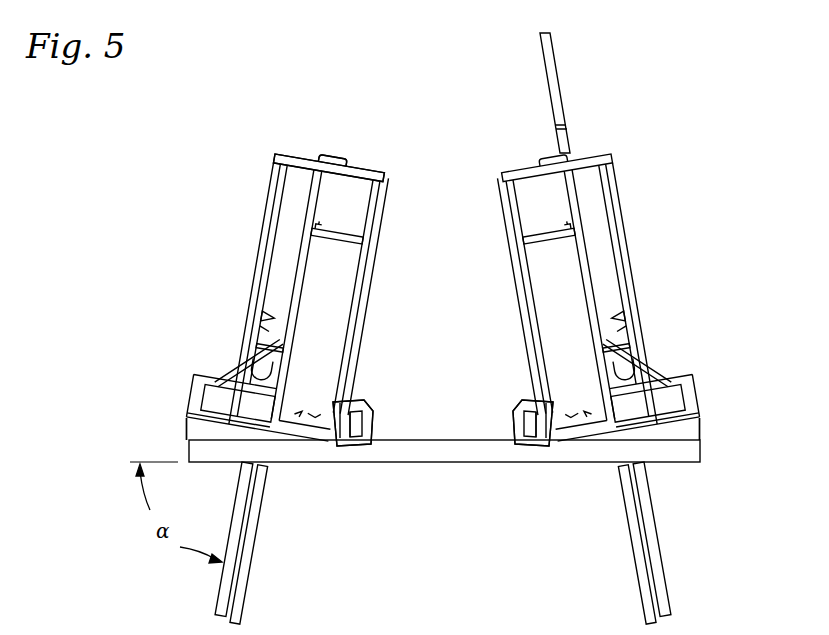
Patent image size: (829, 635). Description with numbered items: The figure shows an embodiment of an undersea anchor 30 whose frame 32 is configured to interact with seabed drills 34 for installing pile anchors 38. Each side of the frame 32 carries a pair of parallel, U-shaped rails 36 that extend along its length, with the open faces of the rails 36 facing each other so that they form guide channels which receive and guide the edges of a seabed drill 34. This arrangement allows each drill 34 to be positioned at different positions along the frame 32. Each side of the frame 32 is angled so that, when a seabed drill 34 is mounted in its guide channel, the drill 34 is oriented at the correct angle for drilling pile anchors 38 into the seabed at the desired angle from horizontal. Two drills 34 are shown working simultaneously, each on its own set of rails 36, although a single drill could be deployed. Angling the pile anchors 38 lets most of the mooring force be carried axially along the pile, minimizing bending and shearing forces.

The undersea anchor 30 is at (192, 309).
The frame 32 is at (421, 463).
The seabed drill 34 is at (355, 169).
The U-shaped rails 36 is at (213, 372).
The pile anchors 38 is at (660, 553).